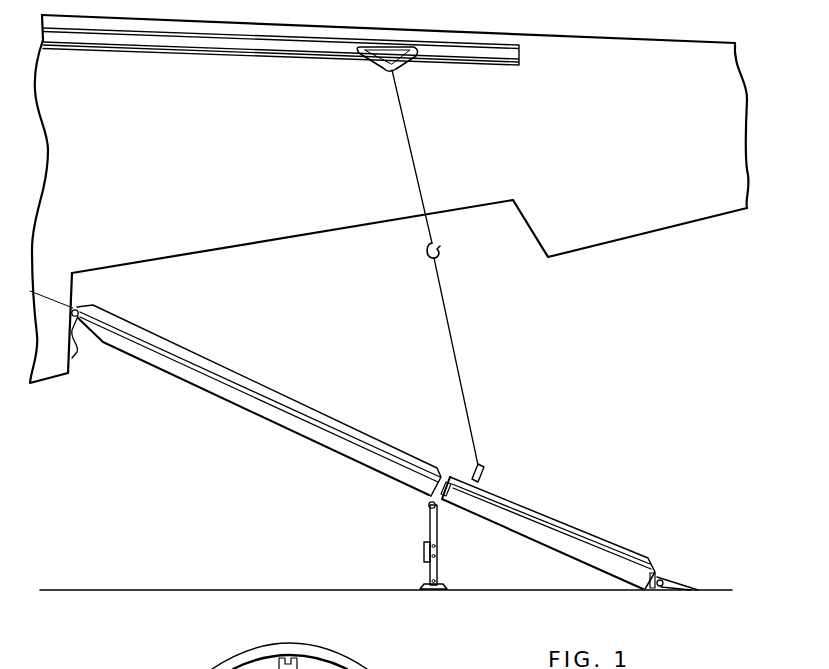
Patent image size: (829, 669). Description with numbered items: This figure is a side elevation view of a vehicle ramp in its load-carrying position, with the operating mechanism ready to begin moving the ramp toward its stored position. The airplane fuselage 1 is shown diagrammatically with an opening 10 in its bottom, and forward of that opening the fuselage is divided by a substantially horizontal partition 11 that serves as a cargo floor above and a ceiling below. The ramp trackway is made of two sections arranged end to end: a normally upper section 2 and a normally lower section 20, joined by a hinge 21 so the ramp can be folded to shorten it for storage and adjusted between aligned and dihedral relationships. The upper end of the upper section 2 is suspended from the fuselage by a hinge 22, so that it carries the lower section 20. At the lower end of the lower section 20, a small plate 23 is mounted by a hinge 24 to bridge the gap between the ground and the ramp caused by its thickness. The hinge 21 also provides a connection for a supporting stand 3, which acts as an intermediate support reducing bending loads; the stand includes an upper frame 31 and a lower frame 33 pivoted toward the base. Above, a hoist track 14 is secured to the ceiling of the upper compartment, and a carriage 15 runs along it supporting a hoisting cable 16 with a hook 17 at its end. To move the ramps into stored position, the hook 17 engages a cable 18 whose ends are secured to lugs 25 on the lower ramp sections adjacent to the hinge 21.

The airplane fuselage 1 is at (637, 237).
The upper section 2 is at (240, 404).
The supporting stand 3 is at (432, 591).
The opening 10 is at (270, 245).
The horizontal partition 11 is at (80, 348).
The track 14 is at (485, 65).
The carriage 15 is at (400, 60).
The hoisting cable 16 is at (408, 134).
The hook 17 is at (442, 250).
The cable 18 is at (457, 357).
The lower section 20 is at (552, 543).
The hinge 21 is at (428, 505).
The hinge 22 is at (80, 310).
The small plate 23 is at (681, 585).
The hinge 24 is at (661, 578).
The lug 25 is at (485, 472).
The upper frame 31 is at (428, 520).
The lower frame 33 is at (438, 563).